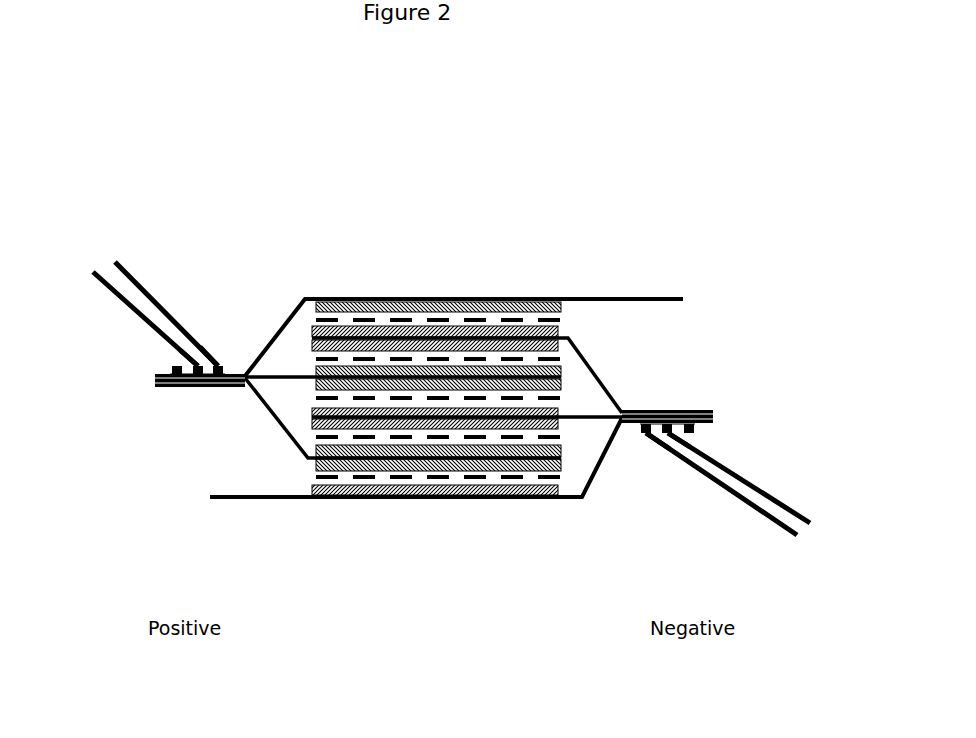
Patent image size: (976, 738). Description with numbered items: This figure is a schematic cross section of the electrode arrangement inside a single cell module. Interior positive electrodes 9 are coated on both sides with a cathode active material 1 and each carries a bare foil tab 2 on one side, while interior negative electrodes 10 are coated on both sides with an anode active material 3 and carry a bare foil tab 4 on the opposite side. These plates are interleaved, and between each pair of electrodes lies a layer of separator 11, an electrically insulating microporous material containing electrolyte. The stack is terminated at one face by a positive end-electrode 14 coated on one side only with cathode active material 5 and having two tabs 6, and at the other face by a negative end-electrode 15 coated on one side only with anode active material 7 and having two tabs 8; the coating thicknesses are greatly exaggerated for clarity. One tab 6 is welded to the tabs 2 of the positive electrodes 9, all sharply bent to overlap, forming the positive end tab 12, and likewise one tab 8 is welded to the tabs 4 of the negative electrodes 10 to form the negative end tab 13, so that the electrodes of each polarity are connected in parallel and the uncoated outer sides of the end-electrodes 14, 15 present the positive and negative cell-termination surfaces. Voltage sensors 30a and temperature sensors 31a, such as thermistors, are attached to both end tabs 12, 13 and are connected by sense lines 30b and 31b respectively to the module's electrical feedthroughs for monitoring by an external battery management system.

The cathode active material 1 is at (313, 388).
The foil tab 2 is at (280, 382).
The anode active material 3 is at (557, 410).
The foil tab 4 is at (595, 413).
The cathode active material 5 is at (542, 305).
The foil tab 6 is at (283, 327).
The anode active material 7 is at (542, 498).
The foil tab 8 is at (263, 502).
The interior positive electrode 9 is at (283, 433).
The interior negative electrode 10 is at (612, 393).
The separator 11 is at (567, 318).
The end tab 12 is at (148, 383).
The end tab 13 is at (715, 417).
The positive end-electrode 14 is at (448, 297).
The negative end-electrode 15 is at (442, 500).
The voltage sensor 30a is at (168, 365).
The sense line 30b is at (168, 363).
The temperature sensor 31a is at (232, 352).
The sense line 31b is at (110, 250).